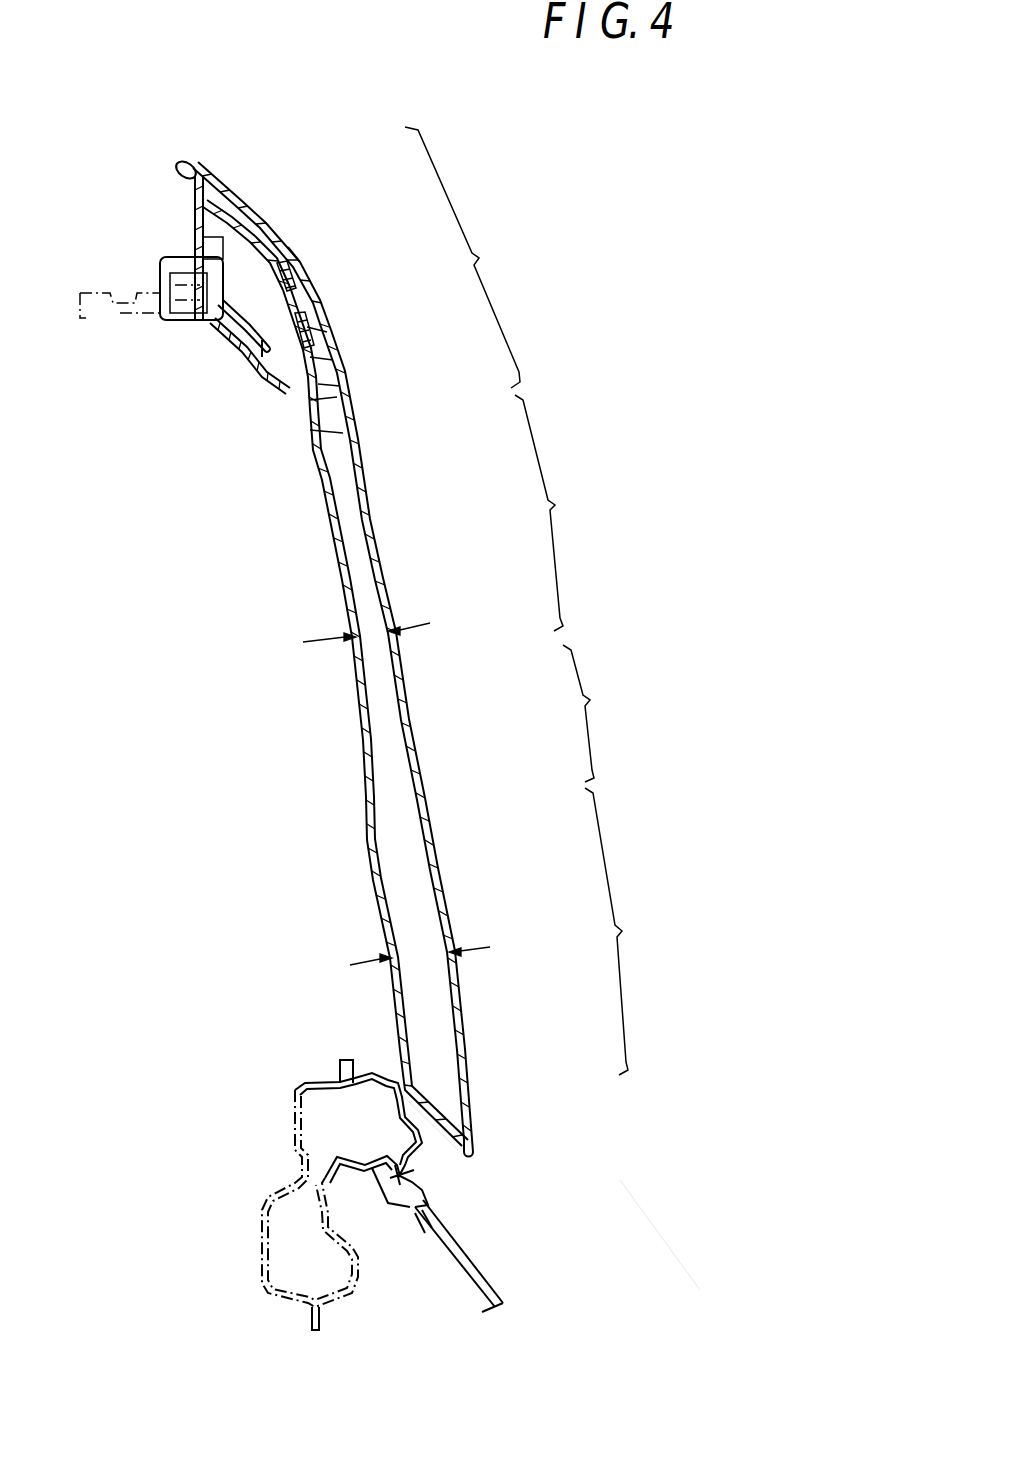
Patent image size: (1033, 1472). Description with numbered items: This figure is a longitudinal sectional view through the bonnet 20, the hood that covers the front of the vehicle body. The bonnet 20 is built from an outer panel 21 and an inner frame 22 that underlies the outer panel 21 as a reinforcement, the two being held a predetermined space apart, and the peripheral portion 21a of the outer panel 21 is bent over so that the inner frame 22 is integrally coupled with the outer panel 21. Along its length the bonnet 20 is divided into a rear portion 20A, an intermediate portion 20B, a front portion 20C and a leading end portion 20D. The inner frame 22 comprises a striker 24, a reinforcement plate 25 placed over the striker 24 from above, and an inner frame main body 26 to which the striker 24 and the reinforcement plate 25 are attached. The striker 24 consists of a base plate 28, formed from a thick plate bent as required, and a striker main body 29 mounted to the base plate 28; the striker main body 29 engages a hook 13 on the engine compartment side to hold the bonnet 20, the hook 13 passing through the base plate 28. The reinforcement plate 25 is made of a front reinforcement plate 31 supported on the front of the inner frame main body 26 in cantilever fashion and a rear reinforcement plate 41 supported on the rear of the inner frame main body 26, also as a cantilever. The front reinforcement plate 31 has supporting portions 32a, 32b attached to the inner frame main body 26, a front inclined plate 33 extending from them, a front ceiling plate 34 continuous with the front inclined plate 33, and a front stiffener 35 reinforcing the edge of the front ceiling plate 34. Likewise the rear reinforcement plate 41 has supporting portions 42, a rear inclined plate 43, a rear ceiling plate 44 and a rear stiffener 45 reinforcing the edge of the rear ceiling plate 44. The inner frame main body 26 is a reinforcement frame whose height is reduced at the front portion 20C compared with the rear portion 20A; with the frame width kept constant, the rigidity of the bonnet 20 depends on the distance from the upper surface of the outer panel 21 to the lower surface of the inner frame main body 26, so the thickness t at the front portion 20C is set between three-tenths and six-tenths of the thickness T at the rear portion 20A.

The hook 13 is at (132, 317).
The bonnet 20 is at (641, 1206).
The rear portion of the bonnet 20A is at (635, 931).
The intermediate portion of the bonnet 20B is at (607, 713).
The front portion of the bonnet 20C is at (563, 513).
The leading end portion of the bonnet 20D is at (474, 257).
The outer panel 21 is at (480, 1076).
The peripheral portion of the outer panel 21a is at (182, 180).
The inner frame 22 is at (300, 883).
The striker 24 is at (212, 370).
The reinforcement plate 25 is at (293, 368).
The inner frame main body 26 is at (368, 887).
The base plate 28 is at (262, 363).
The striker main body 29 is at (185, 320).
The front reinforcement plate 31 is at (262, 225).
The supporting portions 32a is at (205, 193).
The supporting portions 32b is at (199, 248).
The front inclined plate 33 is at (233, 223).
The front ceiling plate 34 is at (288, 247).
The front stiffener 35 is at (298, 270).
The rear reinforcement plate 41 is at (338, 385).
The supporting portions 42 is at (316, 431).
The rear inclined plate 43 is at (316, 398).
The rear ceiling plate 44 is at (312, 360).
The rear stiffener 45 is at (313, 332).
The thickness of the bonnet at the front portion t is at (370, 633).
The thickness of the bonnet at the rear portion T is at (420, 958).